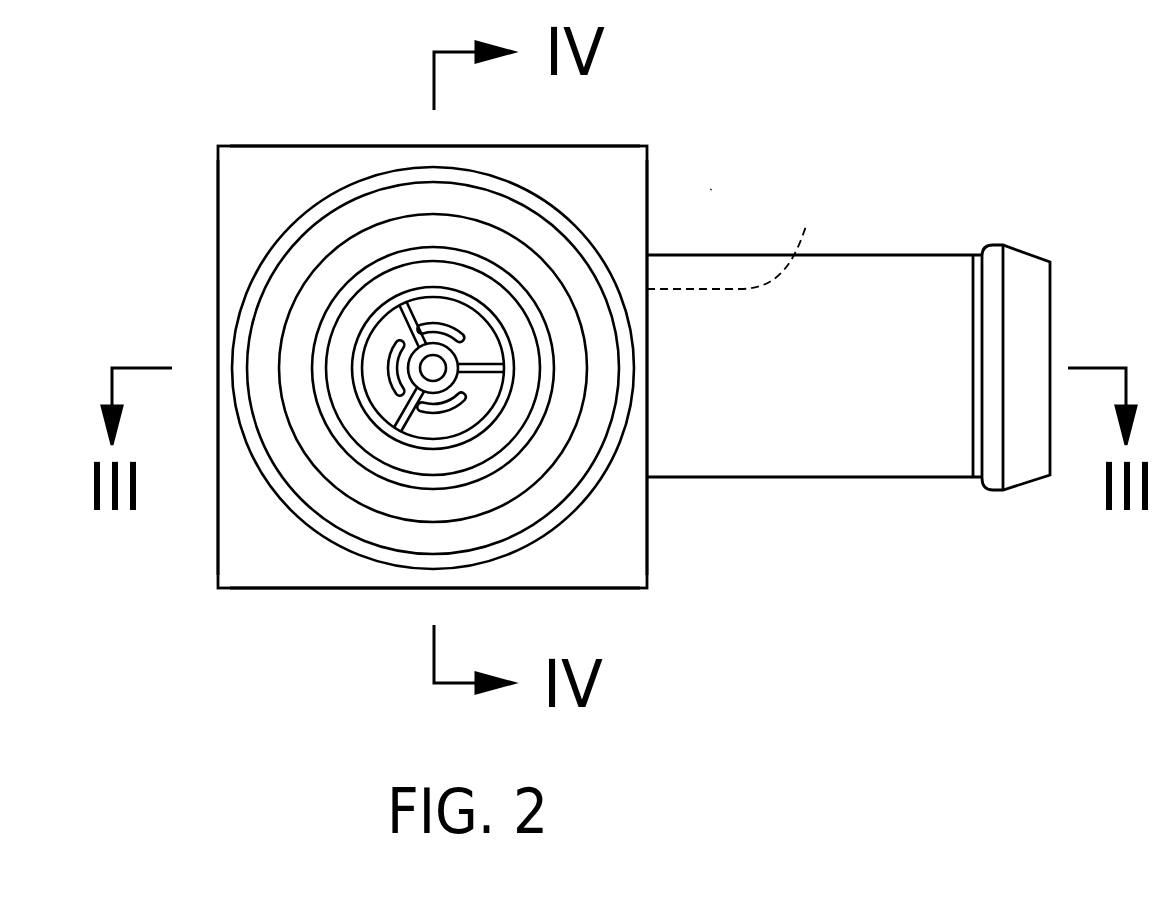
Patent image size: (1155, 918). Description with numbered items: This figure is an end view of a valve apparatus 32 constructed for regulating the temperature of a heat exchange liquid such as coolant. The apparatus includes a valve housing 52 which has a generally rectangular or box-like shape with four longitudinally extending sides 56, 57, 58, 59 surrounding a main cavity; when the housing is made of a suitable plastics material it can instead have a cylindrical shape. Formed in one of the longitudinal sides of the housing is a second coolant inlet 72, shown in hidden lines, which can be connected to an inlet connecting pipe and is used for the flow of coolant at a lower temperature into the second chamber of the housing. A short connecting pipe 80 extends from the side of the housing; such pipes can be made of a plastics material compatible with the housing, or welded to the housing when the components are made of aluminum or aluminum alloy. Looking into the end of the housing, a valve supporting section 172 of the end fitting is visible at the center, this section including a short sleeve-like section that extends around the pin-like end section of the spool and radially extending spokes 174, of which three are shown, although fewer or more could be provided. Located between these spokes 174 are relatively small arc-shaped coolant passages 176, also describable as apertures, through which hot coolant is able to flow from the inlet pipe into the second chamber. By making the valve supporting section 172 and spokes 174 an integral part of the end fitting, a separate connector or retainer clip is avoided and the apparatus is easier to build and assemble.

The valve apparatus 32 is at (707, 192).
The valve housing 52 is at (218, 178).
The longitudinal side 56 is at (324, 590).
The longitudinal side 57 is at (647, 512).
The longitudinal side 58 is at (352, 147).
The longitudinal side 59 is at (218, 260).
The second coolant inlet 72 is at (742, 234).
The connecting pipe 80 is at (857, 450).
The valve supporting section 172 is at (453, 342).
The spokes 174 is at (388, 320).
The arc-shaped coolant passages 176 is at (380, 395).